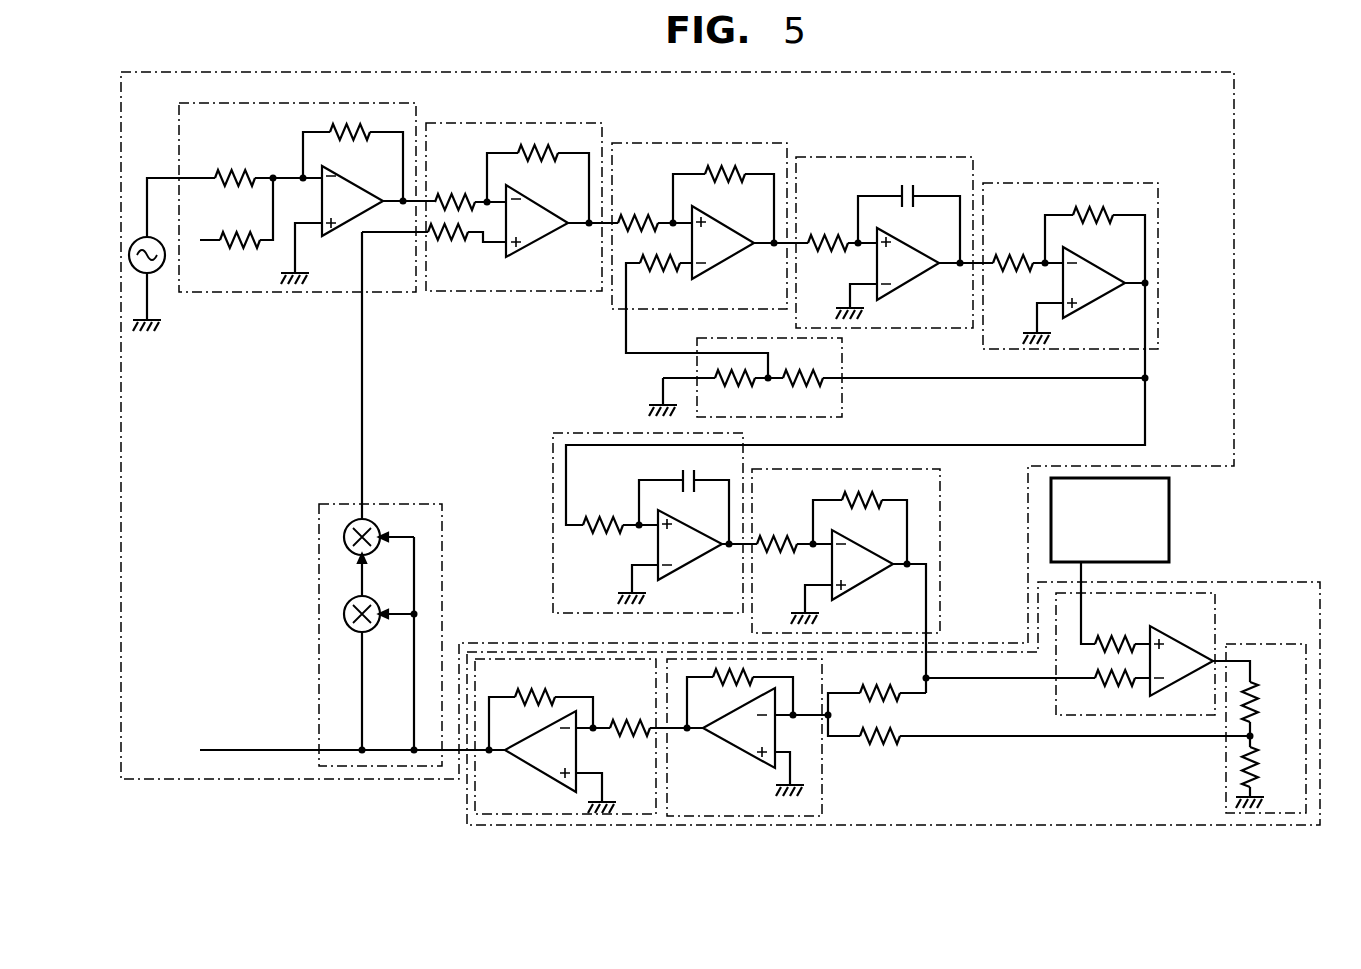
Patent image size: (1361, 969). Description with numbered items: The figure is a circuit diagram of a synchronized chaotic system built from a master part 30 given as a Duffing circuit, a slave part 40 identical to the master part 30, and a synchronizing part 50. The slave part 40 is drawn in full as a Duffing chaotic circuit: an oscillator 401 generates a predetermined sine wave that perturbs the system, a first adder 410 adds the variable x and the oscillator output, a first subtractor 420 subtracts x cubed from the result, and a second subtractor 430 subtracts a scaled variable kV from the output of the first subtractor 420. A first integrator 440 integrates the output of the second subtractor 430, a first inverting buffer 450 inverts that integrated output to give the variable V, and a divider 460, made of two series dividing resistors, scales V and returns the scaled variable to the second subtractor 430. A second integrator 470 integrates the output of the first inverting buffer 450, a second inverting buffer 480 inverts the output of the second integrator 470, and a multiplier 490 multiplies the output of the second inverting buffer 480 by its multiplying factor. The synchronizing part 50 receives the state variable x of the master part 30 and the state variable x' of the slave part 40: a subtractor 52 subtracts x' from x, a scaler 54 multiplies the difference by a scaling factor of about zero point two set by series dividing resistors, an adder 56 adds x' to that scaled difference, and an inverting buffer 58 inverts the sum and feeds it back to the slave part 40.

The slave part 40 is at (1236, 135).
The oscillator 401 is at (121, 192).
The first adder 410 is at (357, 103).
The first subtractor 420 is at (560, 123).
The second subtractor 430 is at (742, 143).
The first integrator 440 is at (945, 157).
The first inverting buffer 450 is at (1133, 183).
The divider 460 is at (842, 403).
The second integrator 470 is at (568, 433).
The second inverting buffer 480 is at (940, 485).
The multiplier 490 is at (442, 504).
The master part 30 is at (1110, 532).
The synchronizing part 50 is at (1276, 580).
The subtractor 52 is at (1200, 593).
The scaler 54 is at (1305, 680).
The adder 56 is at (822, 800).
The inverting buffer 58 is at (515, 659).